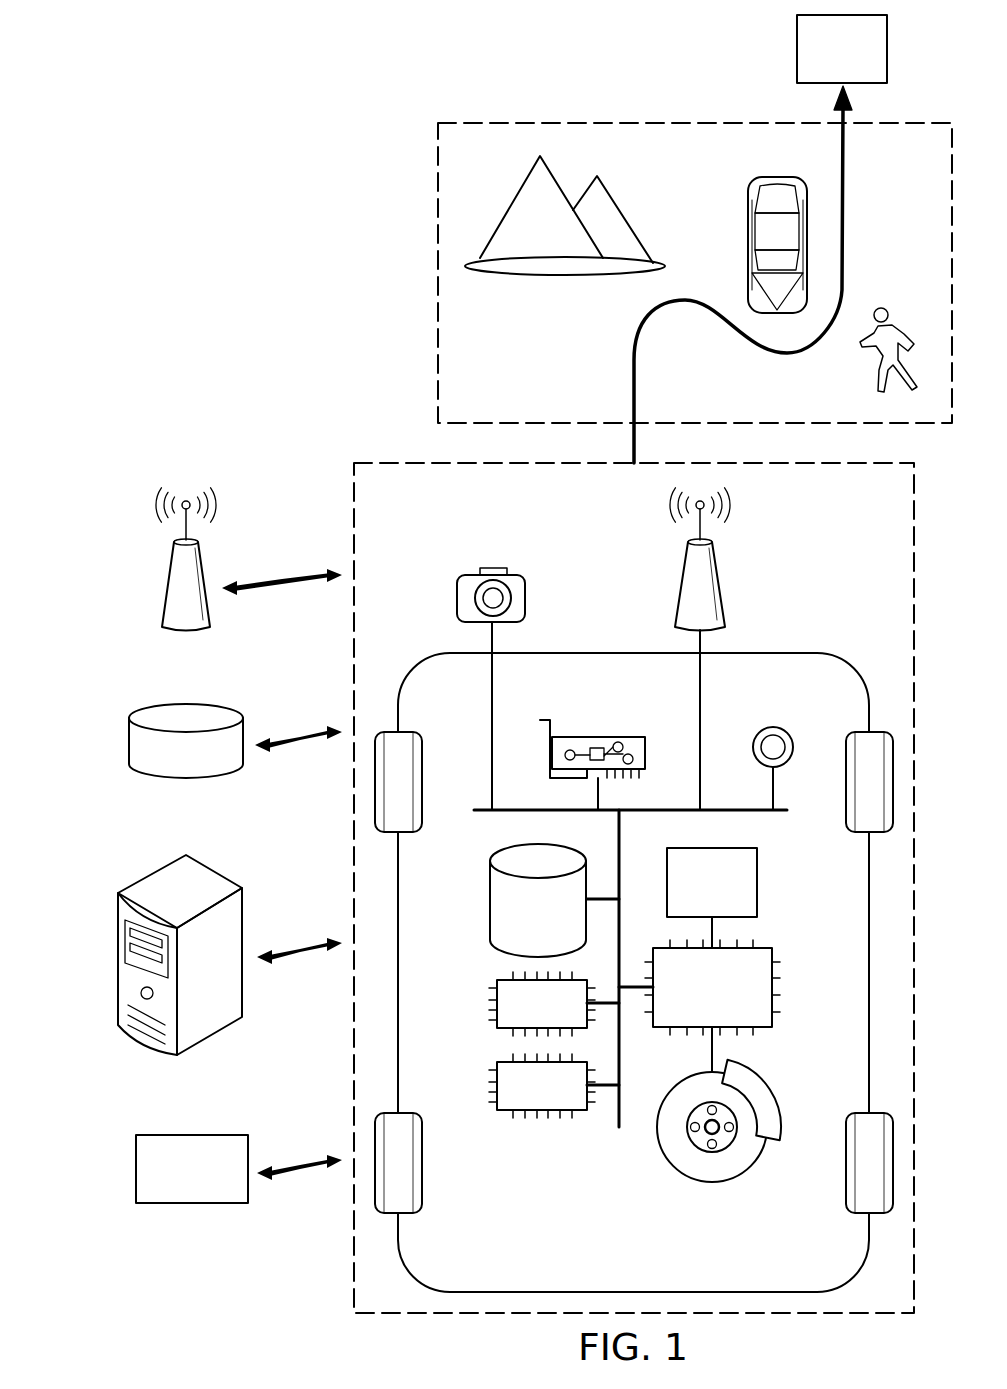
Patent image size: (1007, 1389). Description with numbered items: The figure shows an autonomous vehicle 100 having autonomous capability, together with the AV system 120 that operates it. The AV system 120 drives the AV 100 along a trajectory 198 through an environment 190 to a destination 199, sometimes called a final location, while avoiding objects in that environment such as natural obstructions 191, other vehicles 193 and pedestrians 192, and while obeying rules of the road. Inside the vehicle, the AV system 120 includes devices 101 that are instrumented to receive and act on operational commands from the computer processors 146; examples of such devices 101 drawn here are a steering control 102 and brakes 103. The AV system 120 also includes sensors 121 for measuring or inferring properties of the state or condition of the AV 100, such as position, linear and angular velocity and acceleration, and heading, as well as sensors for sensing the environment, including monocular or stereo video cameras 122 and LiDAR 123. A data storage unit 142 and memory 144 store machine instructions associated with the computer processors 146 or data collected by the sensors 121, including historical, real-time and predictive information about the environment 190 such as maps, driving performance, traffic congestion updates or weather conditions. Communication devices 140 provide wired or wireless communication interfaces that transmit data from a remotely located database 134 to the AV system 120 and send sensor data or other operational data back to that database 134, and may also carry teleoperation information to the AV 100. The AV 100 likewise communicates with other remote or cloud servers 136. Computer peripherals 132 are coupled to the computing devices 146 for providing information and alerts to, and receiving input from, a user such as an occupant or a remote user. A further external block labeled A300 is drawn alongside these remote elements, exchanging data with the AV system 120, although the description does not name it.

The autonomous vehicle 100 is at (607, 642).
The devices 101 is at (772, 1027).
The steering control 102 is at (757, 882).
The brakes 103 is at (768, 1087).
The AV system 120 is at (392, 452).
The sensors 121 is at (781, 728).
The video cameras 122 is at (473, 575).
The LiDAR 123 is at (728, 502).
The computer peripherals 132 is at (167, 580).
The remotely located database 134 is at (129, 738).
The remote servers 136 is at (118, 968).
The external system A300 is at (136, 1168).
The communication devices 140 is at (585, 737).
The data storage unit 142 is at (490, 908).
The memory 144 is at (500, 1030).
The computer processors 146 is at (503, 1112).
The environment 190 is at (428, 206).
The natural obstructions 191 is at (625, 217).
The pedestrians 192 is at (872, 377).
The vehicles 193 is at (746, 250).
The trajectory 198 is at (843, 211).
The destination 199 is at (895, 44).